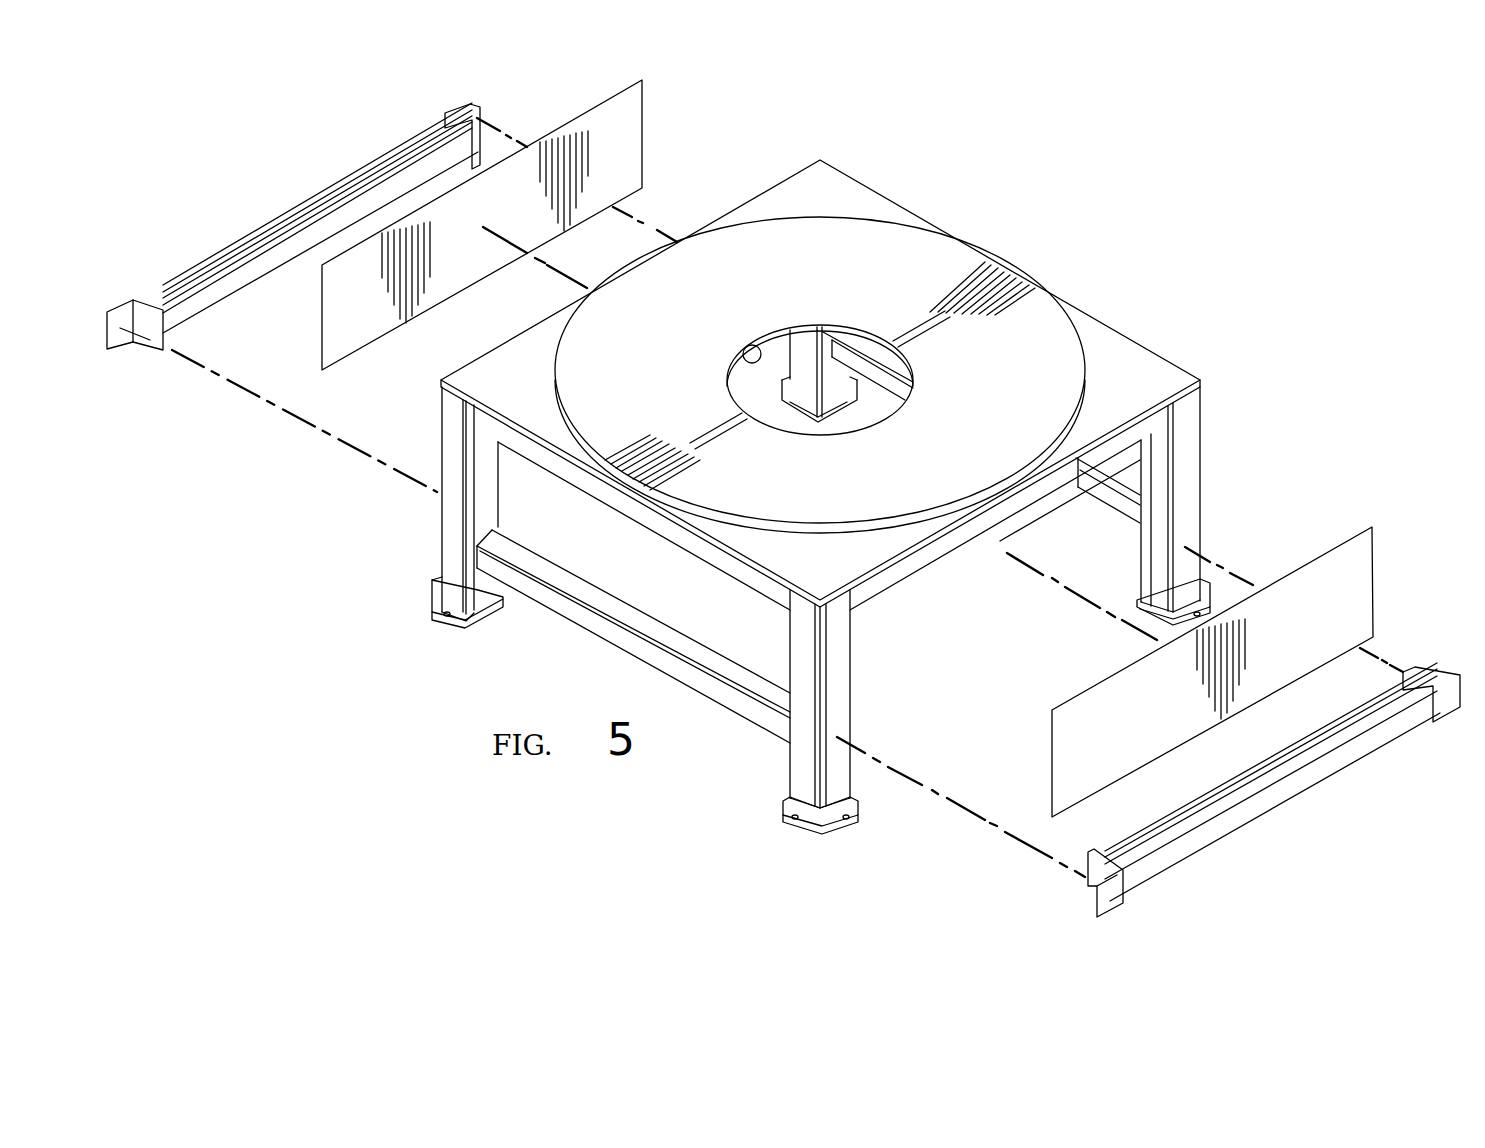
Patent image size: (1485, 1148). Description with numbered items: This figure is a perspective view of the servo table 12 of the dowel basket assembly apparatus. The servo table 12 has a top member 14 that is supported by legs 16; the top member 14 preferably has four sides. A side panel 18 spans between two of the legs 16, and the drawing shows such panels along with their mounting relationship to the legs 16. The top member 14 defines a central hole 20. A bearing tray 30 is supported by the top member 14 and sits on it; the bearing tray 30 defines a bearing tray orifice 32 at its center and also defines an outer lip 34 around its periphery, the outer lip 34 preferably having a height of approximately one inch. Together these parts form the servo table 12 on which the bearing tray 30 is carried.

The servo table 12 is at (1130, 160).
The top member 14 is at (1100, 328).
The legs 16 is at (441, 518).
The side panel 18 is at (645, 142).
The central hole 20 is at (763, 352).
The bearing tray 30 is at (818, 275).
The bearing tray orifice 32 is at (860, 343).
The outer lip 34 is at (1008, 265).